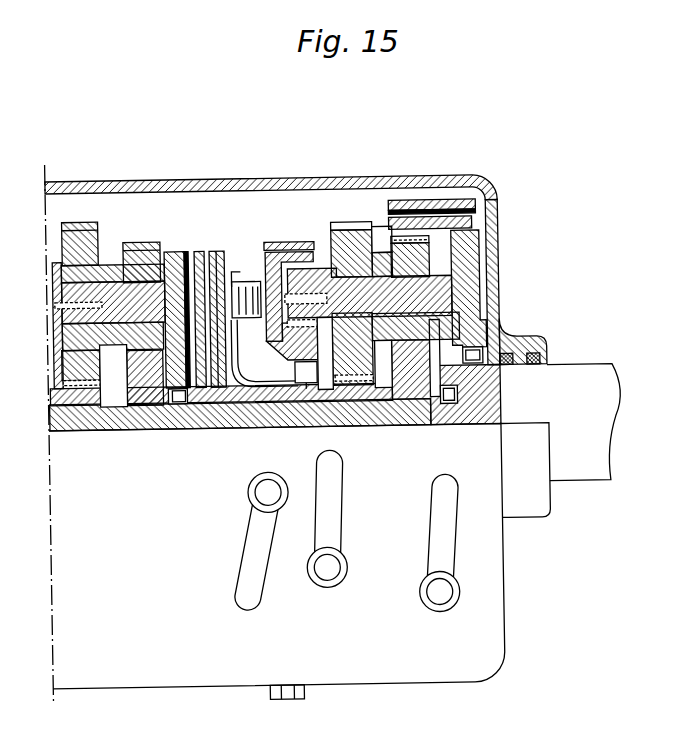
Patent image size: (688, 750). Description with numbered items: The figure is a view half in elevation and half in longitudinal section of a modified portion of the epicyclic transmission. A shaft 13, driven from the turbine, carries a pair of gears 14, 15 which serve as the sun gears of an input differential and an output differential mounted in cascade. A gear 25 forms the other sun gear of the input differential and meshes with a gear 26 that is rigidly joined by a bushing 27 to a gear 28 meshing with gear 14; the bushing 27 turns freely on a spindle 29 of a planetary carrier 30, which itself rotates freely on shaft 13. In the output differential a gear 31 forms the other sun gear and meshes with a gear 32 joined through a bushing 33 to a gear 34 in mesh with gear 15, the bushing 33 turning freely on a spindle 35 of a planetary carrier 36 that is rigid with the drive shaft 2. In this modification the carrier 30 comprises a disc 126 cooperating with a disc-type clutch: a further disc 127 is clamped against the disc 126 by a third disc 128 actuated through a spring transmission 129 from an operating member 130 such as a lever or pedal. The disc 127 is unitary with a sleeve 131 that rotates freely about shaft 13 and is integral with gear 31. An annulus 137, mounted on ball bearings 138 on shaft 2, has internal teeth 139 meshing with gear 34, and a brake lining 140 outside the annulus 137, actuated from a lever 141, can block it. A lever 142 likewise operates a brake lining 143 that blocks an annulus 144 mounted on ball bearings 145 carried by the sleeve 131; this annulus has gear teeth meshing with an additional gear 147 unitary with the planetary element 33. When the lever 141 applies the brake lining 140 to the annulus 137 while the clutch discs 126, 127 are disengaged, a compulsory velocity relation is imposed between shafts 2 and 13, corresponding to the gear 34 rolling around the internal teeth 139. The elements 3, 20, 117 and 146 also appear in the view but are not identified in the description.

The drive shaft 2 is at (571, 392).
The cover 3 is at (191, 184).
The shaft 13 is at (122, 433).
The gear 14 is at (149, 399).
The gear 15 is at (417, 419).
The retaining ring 20 is at (64, 433).
The gear 25 is at (79, 387).
The gear 26 is at (75, 233).
The bushing 27 is at (110, 272).
The gear 28 is at (149, 261).
The spindle 29 is at (111, 331).
The planetary carrier 30 is at (179, 260).
The gear 31 is at (360, 388).
The gear 32 is at (349, 227).
The bushing 33 is at (379, 265).
The gear 34 is at (403, 236).
The spindle 35 is at (372, 327).
The planetary carrier 36 is at (450, 304).
The roller 117 is at (450, 415).
The disc 126 is at (187, 265).
The further disc 127 is at (200, 265).
The third disc 128 is at (217, 261).
The spring transmission 129 is at (245, 289).
The operating member 130 is at (251, 503).
The sleeve 131 is at (288, 401).
The annulus 137 is at (479, 218).
The ball bearings 138 is at (507, 340).
The internal teeth 139 is at (411, 226).
The brake lining 140 is at (441, 210).
The lever 141 is at (444, 613).
The lever 142 is at (319, 589).
The brake lining 143 is at (283, 247).
The annulus 144 is at (318, 257).
The ball bearings 145 is at (306, 381).
The spring seat 146 is at (289, 329).
The additional gear 147 is at (291, 319).